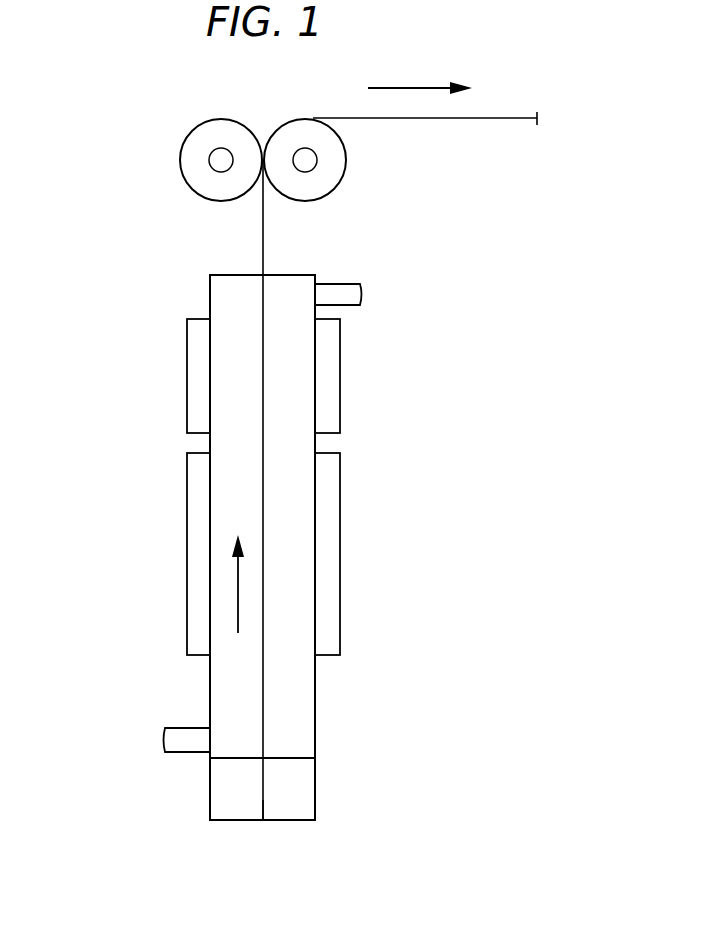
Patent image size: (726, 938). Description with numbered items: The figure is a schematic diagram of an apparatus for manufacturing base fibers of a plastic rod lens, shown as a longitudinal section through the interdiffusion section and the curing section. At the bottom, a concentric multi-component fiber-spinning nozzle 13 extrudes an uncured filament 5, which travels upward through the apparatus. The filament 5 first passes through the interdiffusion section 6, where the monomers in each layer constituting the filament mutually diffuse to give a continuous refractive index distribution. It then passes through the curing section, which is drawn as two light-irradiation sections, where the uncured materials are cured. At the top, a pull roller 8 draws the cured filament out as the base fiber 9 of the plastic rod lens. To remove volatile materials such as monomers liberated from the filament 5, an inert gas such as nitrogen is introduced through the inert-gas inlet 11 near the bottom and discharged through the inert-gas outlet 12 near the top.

The filament 5 is at (263, 713).
The interdiffusion section 6 is at (315, 737).
The pull roller 8 is at (193, 158).
The base fiber of plastic rod lens 9 is at (465, 118).
The inert gas inlet 11 is at (175, 740).
The inert gas outlet 12 is at (350, 290).
The concentric multi-component fiber-spinning nozzle 13 is at (263, 820).